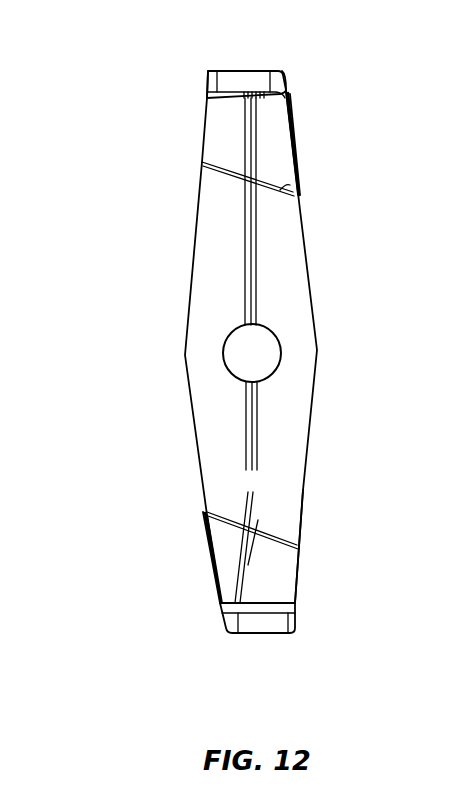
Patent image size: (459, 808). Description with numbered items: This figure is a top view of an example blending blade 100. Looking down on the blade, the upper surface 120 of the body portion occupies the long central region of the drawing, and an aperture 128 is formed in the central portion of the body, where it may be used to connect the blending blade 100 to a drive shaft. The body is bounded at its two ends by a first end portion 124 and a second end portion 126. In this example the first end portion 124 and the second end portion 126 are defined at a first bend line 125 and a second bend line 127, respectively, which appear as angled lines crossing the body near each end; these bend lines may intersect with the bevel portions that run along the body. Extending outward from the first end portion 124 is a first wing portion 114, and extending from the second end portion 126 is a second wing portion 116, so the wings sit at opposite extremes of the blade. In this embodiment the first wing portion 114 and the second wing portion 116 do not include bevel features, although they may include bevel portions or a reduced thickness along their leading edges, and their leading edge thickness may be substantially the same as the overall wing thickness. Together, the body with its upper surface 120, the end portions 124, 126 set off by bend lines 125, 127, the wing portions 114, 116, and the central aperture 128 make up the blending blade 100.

The blending blade 100 is at (150, 247).
The first wing portion 114 is at (232, 72).
The second wing portion 116 is at (224, 621).
The upper surface 120 is at (271, 482).
The first end portion 124 is at (300, 585).
The first bend line 125 is at (270, 533).
The second end portion 126 is at (293, 133).
The second bend line 127 is at (284, 180).
The aperture 128 is at (228, 338).